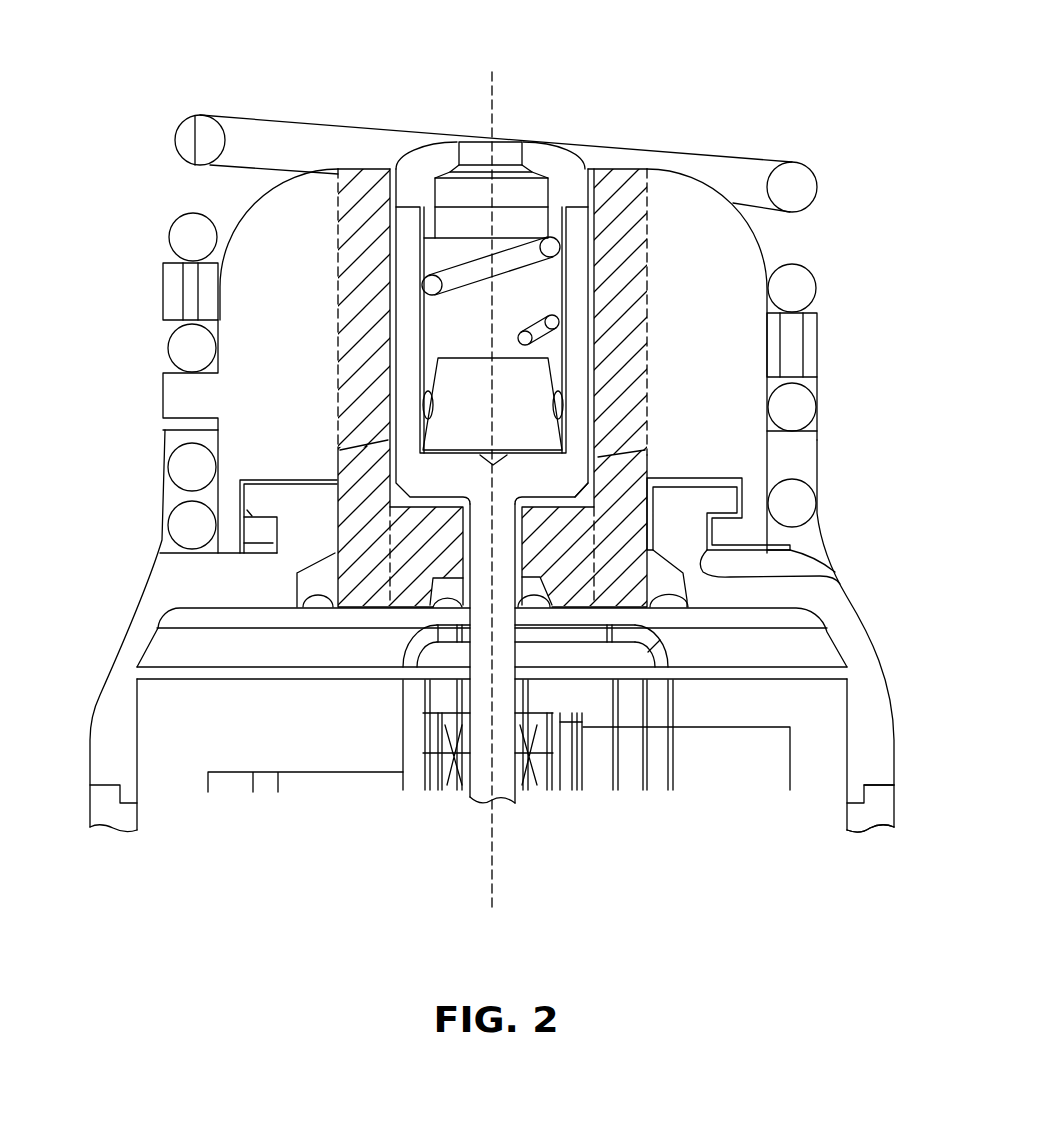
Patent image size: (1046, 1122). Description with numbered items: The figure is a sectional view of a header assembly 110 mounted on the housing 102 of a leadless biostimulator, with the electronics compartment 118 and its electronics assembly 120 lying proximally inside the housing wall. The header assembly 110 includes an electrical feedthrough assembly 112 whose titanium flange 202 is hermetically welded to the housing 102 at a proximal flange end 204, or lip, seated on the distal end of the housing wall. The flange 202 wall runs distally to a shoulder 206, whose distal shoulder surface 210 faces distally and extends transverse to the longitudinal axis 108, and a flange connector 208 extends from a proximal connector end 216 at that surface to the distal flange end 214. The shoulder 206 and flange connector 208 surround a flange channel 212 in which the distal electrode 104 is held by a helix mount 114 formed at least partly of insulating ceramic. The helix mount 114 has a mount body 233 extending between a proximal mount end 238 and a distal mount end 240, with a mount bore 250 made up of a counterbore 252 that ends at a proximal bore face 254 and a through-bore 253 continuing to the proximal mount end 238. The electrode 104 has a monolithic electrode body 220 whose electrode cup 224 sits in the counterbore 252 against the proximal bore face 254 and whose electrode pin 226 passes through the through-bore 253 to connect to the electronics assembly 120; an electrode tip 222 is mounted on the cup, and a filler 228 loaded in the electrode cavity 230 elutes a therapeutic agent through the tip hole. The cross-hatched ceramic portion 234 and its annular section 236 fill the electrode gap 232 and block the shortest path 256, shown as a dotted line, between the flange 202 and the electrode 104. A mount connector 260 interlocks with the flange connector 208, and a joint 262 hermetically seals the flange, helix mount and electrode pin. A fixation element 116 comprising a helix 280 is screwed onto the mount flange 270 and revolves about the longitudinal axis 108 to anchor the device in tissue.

The housing 102 is at (886, 832).
The distal electrode 104 is at (405, 703).
The longitudinal axis 108 is at (490, 68).
The header assembly 110 is at (734, 96).
The electrical feedthrough assembly 112 is at (579, 347).
The helix mount 114 is at (579, 347).
The fixation element 116 is at (525, 163).
The electronics compartment 118 is at (788, 658).
The electronics assembly 120 is at (665, 708).
The flange 202 is at (877, 737).
The proximal flange end 204 is at (880, 787).
The shoulder 206 is at (138, 637).
The flange connector 208 is at (247, 513).
The distal shoulder surface 210 is at (776, 514).
The flange channel 212 is at (657, 582).
The distal flange end 214 is at (283, 483).
The proximal connector end 216 is at (793, 572).
The electrode body 220 is at (716, 388).
The electrode tip 222 is at (537, 158).
The electrode cup 224 is at (548, 497).
The electrode pin 226 is at (497, 722).
The filler 228 is at (517, 393).
The electrode cavity 230 is at (450, 338).
The electrode gap 232 is at (337, 425).
The mount body 233 is at (764, 247).
The ceramic portion 234 is at (297, 327).
The annular section 236 is at (370, 165).
The proximal mount end 238 is at (452, 594).
The distal mount end 240 is at (297, 327).
The mount bore 250 is at (169, 526).
The counterbore 252 is at (169, 526).
The through-bore 253 is at (537, 572).
The proximal bore face 254 is at (567, 467).
The shortest path 256 is at (588, 487).
The mount connector 260 is at (790, 550).
The joint 262 is at (317, 587).
The mount flange 270 is at (165, 276).
The helix 280 is at (740, 172).